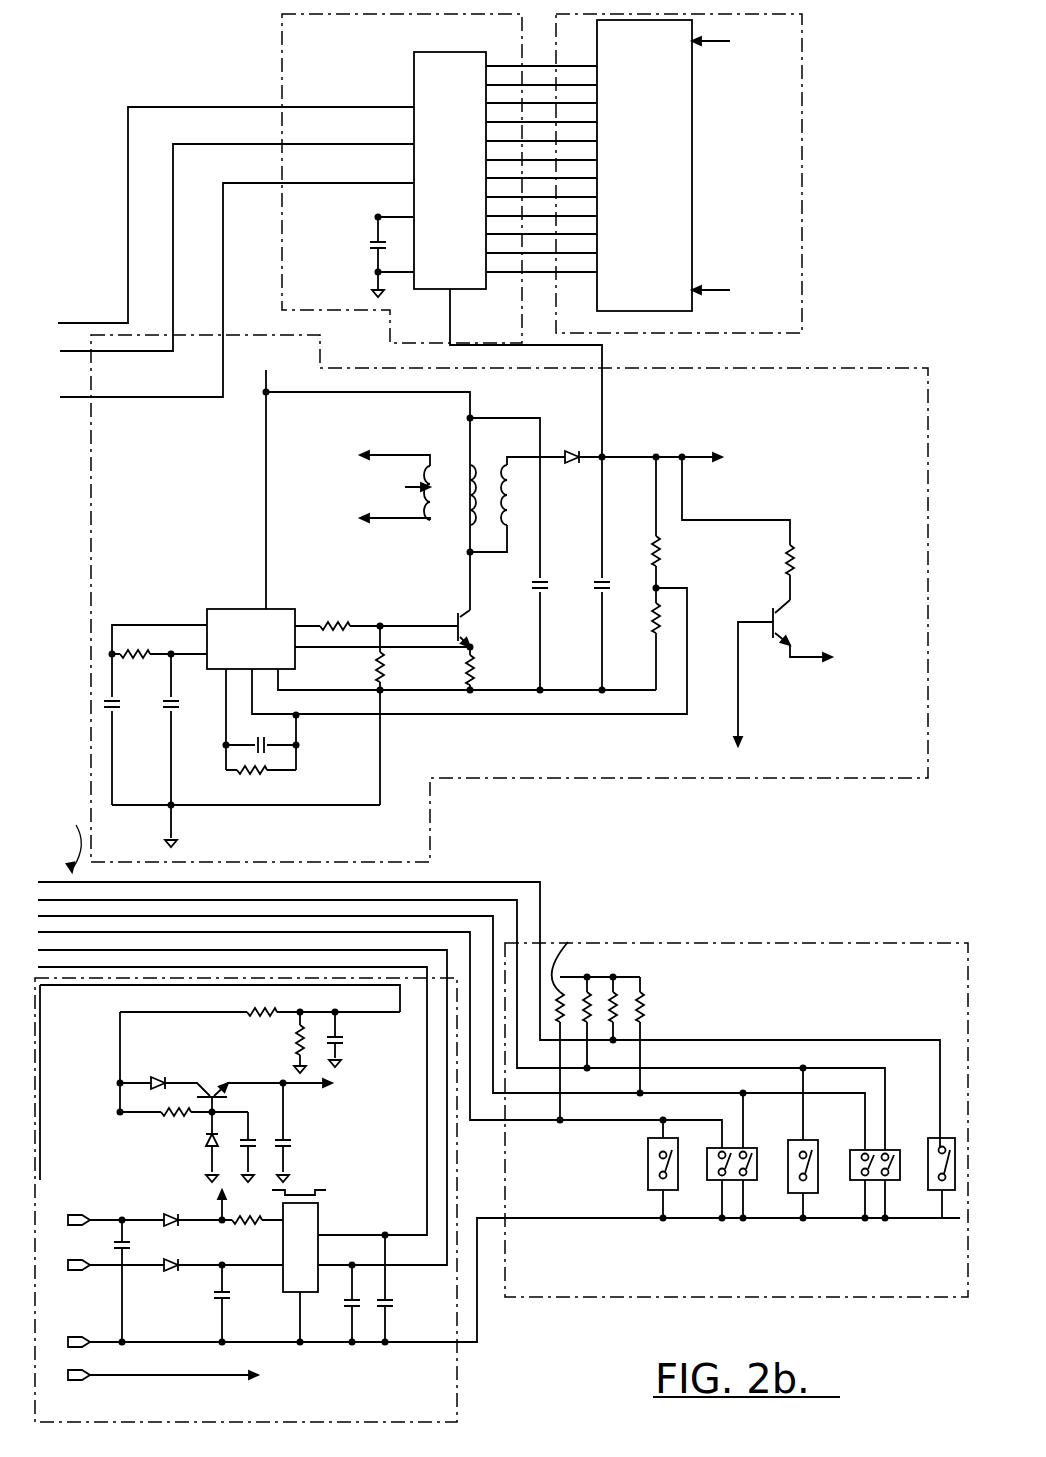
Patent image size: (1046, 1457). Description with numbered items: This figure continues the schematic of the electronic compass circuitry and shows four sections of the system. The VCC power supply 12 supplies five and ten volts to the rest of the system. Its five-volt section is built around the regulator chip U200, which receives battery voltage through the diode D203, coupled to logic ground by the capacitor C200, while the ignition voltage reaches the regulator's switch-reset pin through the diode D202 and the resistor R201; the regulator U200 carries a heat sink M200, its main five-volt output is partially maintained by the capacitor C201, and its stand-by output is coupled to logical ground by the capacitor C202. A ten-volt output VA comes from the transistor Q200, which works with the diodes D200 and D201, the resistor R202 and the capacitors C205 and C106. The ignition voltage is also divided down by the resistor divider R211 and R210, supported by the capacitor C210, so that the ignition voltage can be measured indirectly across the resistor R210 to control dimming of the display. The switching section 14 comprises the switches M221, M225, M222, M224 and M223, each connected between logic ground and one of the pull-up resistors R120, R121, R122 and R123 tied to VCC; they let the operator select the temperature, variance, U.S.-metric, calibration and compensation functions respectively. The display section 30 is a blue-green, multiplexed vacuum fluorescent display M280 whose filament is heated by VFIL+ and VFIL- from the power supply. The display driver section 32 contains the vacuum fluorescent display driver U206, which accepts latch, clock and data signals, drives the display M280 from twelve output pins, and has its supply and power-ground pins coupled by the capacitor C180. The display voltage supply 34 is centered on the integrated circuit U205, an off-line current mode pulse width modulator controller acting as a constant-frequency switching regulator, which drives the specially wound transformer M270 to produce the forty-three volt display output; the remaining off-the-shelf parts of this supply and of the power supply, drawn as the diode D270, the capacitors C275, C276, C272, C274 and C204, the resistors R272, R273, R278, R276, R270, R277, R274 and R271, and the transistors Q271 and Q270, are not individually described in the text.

The VCC power supply 12 is at (516, 1382).
The switching section 14 is at (696, 1302).
The display section 30 is at (810, 138).
The display driver section 32 is at (276, 57).
The display voltage supply 34 is at (488, 576).
The vacuum fluorescent display driver U206 is at (455, 180).
The vacuum fluorescent display M280 is at (647, 177).
The capacitor C180 is at (356, 244).
The transformer M270 is at (437, 497).
The diode D270 is at (567, 447).
The capacitor C275 is at (519, 587).
The capacitor C276 is at (620, 578).
The resistor R272 is at (678, 522).
The resistor R273 is at (635, 639).
The resistor R278 is at (762, 528).
The transistor Q271 is at (783, 673).
The transistor Q270 is at (485, 630).
The resistor R276 is at (376, 614).
The resistor R270 is at (491, 668).
The resistor R277 is at (402, 715).
The integrated circuit U205 is at (237, 627).
The resistor R274 is at (159, 645).
The capacitor C272 is at (191, 746).
The capacitor C274 is at (261, 738).
The resistor R271 is at (261, 782).
The resistor R211 is at (260, 1003).
The resistor R210 is at (274, 1042).
The capacitor C210 is at (356, 1039).
The diode D200 is at (152, 1075).
The transistor Q200 is at (234, 1087).
The resistor R202 is at (184, 1122).
The diode D201 is at (188, 1147).
The capacitor C205 is at (257, 1140).
The capacitor C106 is at (305, 1132).
The diode D202 is at (159, 1209).
The resistor R201 is at (242, 1233).
The regulator chip U200 is at (325, 1247).
The heat sink M200 is at (327, 1189).
The diode D203 is at (159, 1277).
The capacitor C204 is at (142, 1281).
The capacitor C200 is at (240, 1303).
The capacitor C201 is at (332, 1303).
The capacitor C202 is at (404, 1288).
The pull-up resistor R120 is at (572, 1019).
The pull-up resistor R121 is at (587, 990).
The pull-up resistor R123 is at (613, 990).
The pull-up resistor R122 is at (662, 1035).
The compensation switch M223 is at (634, 1178).
The calibration switch M224 is at (747, 1173).
The U.S.-metric switch M222 is at (818, 1170).
The variance switch M225 is at (889, 1176).
The temperature switch M221 is at (940, 1146).